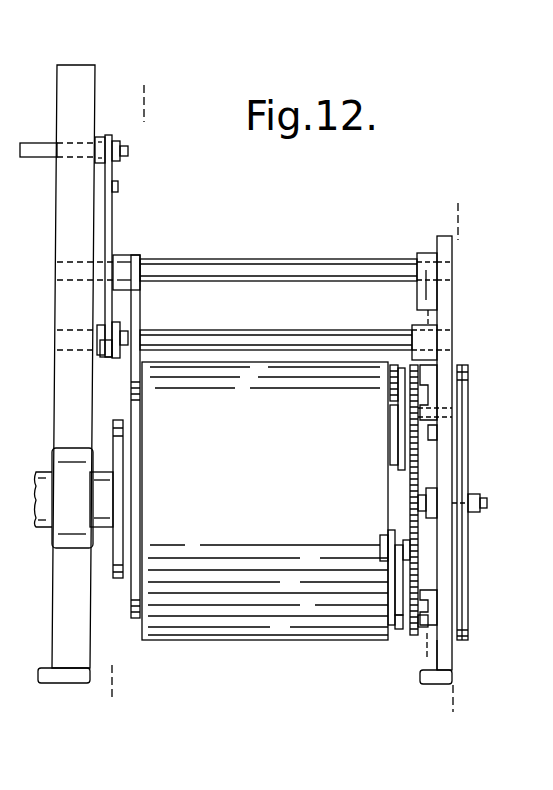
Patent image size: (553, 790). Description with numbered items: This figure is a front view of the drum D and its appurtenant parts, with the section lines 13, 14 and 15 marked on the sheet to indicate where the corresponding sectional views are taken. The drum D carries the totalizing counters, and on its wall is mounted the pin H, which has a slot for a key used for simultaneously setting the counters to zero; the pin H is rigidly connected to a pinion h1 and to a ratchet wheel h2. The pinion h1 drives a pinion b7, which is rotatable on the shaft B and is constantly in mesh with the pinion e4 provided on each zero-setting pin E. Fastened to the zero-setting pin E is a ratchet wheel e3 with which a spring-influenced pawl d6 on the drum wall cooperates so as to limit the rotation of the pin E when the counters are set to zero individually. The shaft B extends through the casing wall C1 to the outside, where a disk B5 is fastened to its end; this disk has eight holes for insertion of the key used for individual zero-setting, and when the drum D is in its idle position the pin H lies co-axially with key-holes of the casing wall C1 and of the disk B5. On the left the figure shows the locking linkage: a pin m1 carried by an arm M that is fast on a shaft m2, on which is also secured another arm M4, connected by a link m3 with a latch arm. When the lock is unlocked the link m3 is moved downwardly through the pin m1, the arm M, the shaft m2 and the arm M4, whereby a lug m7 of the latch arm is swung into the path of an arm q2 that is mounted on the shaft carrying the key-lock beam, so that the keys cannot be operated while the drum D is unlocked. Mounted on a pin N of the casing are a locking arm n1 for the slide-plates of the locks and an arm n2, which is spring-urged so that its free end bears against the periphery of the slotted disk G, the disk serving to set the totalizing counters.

The lug m7 is at (113, 171).
The arm q2 is at (114, 188).
The link m3 is at (109, 233).
The arm n2 is at (136, 309).
The pin N is at (283, 268).
The shaft m2 is at (280, 342).
The arm M4 is at (112, 358).
The locking arm n1 is at (420, 302).
The arm M is at (427, 366).
The pin m1 is at (428, 374).
The drum D is at (191, 640).
The ratchet wheel h2 is at (390, 380).
The pinion h1 is at (400, 412).
The pin H is at (432, 424).
The disk B5 is at (463, 458).
The shaft B is at (488, 503).
The pawl d6 is at (388, 562).
The pinion b7 is at (415, 549).
The zero-setting pin E is at (420, 595).
The pinion e4 is at (410, 623).
The ratchet wheel e3 is at (397, 636).
The casing wall C1 is at (438, 659).
The slotted disk G is at (130, 609).
The section line 13 is at (148, 396).
The section line 14 is at (401, 484).
The section line 15 is at (476, 461).